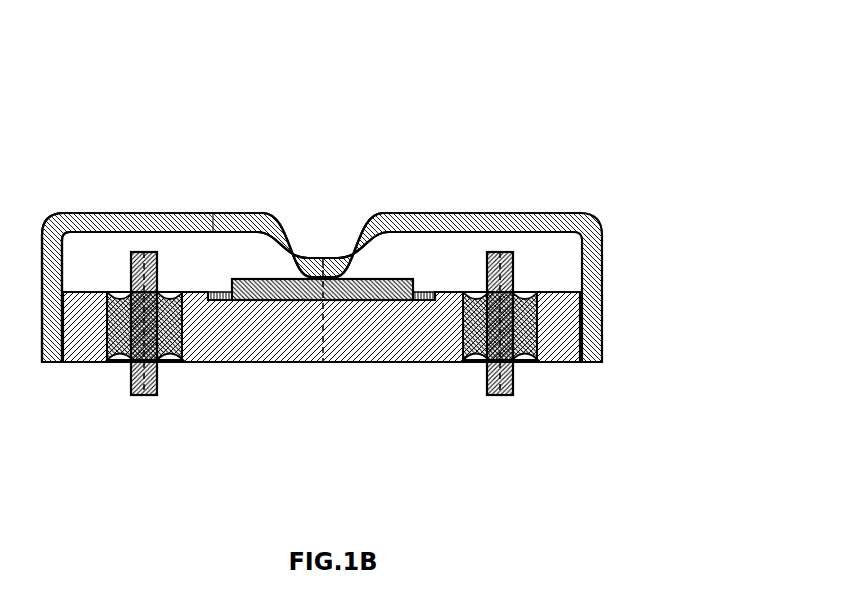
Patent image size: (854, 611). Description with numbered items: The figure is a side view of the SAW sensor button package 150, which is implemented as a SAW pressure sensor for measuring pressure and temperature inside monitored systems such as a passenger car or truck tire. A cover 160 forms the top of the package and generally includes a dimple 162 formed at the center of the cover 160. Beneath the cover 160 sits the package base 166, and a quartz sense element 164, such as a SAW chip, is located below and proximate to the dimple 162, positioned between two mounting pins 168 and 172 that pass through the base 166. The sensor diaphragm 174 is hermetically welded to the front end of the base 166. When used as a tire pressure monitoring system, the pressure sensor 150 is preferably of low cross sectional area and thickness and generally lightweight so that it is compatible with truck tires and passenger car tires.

The SAW sensor button package 150 is at (666, 114).
The cover 160 is at (153, 223).
The dimple 162 is at (315, 226).
The quartz sense element 164 is at (382, 290).
The package base 166 is at (360, 350).
The mounting pin 168 is at (138, 390).
The mounting pin 172 is at (500, 383).
The sensor diaphragm 174 is at (46, 229).